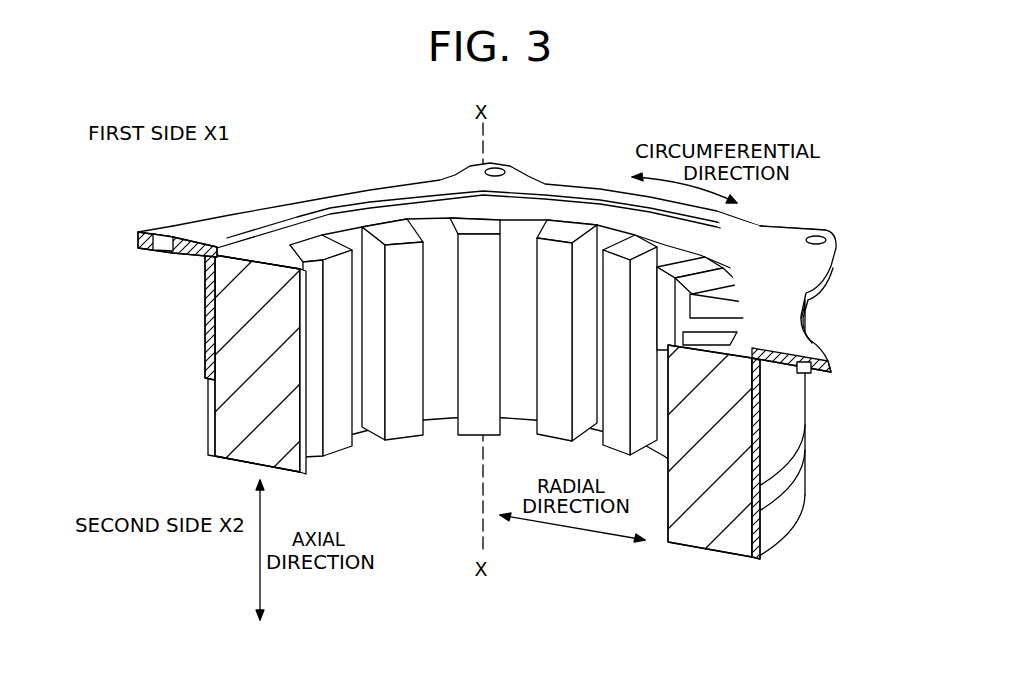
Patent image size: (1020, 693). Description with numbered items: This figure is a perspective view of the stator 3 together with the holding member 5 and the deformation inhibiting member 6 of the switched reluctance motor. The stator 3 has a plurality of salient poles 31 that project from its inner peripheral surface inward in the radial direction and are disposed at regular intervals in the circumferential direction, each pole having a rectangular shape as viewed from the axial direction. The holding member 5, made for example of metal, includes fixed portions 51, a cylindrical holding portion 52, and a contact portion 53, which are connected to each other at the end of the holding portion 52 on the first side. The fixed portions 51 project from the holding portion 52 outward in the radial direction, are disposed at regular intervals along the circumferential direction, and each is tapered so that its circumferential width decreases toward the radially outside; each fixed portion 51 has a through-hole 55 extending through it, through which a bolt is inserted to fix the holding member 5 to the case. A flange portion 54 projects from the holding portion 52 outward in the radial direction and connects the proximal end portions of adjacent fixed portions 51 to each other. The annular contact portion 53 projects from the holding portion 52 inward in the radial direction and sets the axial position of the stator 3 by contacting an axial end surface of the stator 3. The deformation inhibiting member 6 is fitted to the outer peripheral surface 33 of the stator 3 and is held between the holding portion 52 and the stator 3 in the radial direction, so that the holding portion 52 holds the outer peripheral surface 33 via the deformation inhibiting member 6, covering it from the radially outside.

The stator 3 is at (575, 225).
The holding member 5 is at (393, 186).
The deformation inhibiting member 6 is at (762, 522).
The salient pole 31 is at (607, 460).
The outer peripheral surface 33 is at (762, 497).
The fixed portion 51 is at (500, 170).
The holding portion 52 is at (205, 320).
The contact portion 53 is at (802, 328).
The flange portion 54 is at (808, 292).
The through-hole 55 is at (512, 177).